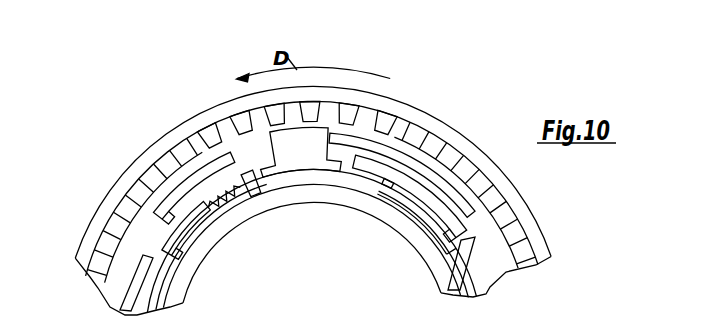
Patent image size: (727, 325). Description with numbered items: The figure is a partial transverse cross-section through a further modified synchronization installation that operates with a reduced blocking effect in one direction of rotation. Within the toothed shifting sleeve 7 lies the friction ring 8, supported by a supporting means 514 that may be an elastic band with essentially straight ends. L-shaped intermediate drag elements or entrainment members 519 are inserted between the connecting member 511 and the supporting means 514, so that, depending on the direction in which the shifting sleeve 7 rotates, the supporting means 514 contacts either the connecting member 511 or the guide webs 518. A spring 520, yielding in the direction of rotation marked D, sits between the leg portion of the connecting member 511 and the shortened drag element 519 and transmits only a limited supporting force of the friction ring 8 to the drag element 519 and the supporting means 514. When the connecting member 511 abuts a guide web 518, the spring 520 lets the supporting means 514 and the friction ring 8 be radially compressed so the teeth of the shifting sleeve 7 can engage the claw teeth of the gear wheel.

The shifting sleeve 7 is at (420, 122).
The friction ring 8 is at (128, 246).
The connecting member 511 is at (315, 164).
The supporting means 514 is at (138, 295).
The guide webs 518 is at (182, 200).
The intermediate drag elements 519 is at (188, 226).
The spring 520 is at (228, 198).